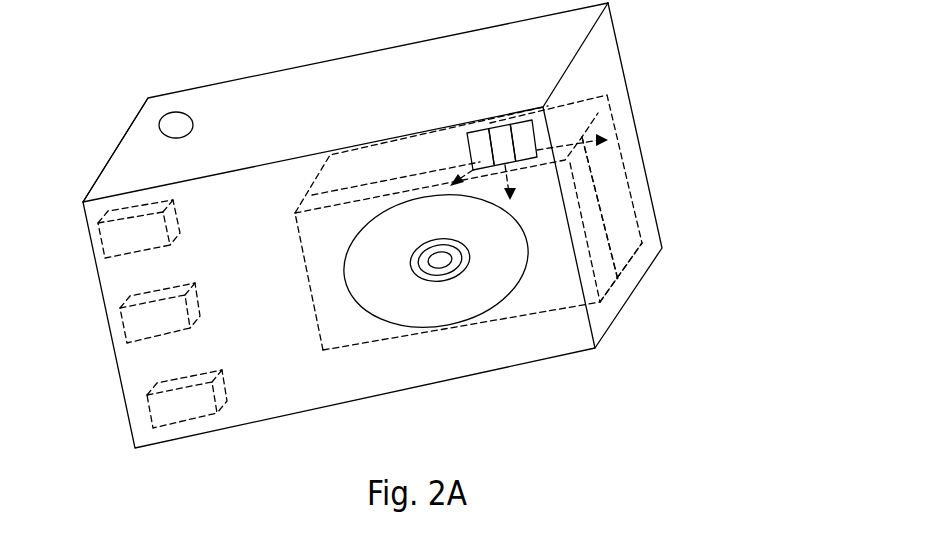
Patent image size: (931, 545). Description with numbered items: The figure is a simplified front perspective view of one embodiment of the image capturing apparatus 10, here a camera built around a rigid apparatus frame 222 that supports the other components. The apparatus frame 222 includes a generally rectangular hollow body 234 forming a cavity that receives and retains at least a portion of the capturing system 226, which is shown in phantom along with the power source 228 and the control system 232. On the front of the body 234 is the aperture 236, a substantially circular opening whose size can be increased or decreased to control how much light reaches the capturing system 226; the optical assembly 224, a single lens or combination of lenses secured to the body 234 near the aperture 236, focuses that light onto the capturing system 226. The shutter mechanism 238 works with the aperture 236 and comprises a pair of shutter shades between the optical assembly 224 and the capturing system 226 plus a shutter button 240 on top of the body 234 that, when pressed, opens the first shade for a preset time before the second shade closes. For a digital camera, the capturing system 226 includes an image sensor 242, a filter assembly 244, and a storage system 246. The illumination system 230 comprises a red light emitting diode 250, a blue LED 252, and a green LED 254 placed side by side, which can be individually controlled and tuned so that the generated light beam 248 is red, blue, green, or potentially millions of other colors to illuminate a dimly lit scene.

The image capturing apparatus 10 is at (150, 92).
The apparatus frame 222 is at (293, 87).
The optical assembly 224 is at (435, 313).
The capturing system 226 is at (695, 219).
The power source 228 is at (138, 413).
The illumination system 230 is at (633, 91).
The control system 232 is at (140, 325).
The body 234 is at (112, 174).
The aperture 236 is at (458, 336).
The shutter mechanism 238 is at (497, 332).
The shutter button 240 is at (176, 119).
The image sensor 242 is at (662, 208).
The filter assembly 244 is at (671, 272).
The storage system 246 is at (112, 239).
The generated light beam 248 is at (468, 177).
The red light emitting diode 250 is at (484, 132).
The blue LED 252 is at (497, 133).
The green LED 254 is at (621, 121).